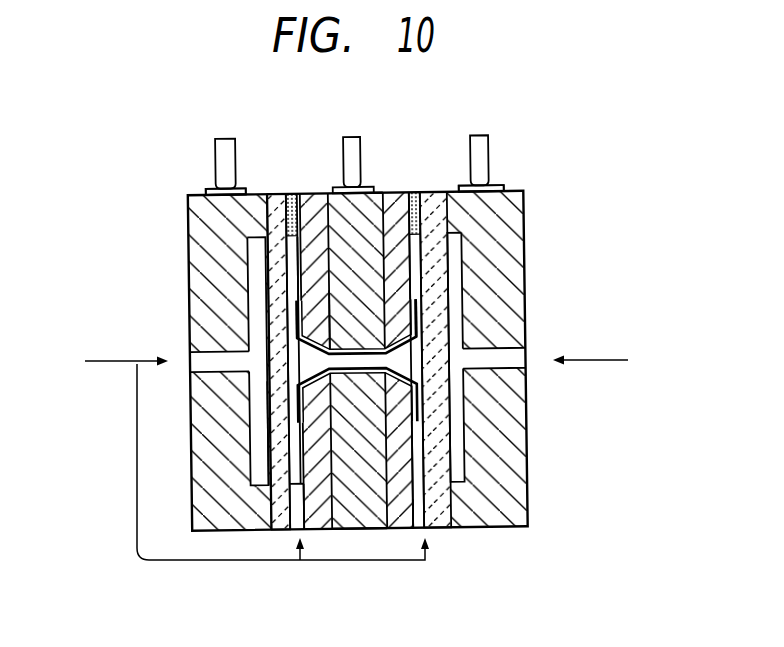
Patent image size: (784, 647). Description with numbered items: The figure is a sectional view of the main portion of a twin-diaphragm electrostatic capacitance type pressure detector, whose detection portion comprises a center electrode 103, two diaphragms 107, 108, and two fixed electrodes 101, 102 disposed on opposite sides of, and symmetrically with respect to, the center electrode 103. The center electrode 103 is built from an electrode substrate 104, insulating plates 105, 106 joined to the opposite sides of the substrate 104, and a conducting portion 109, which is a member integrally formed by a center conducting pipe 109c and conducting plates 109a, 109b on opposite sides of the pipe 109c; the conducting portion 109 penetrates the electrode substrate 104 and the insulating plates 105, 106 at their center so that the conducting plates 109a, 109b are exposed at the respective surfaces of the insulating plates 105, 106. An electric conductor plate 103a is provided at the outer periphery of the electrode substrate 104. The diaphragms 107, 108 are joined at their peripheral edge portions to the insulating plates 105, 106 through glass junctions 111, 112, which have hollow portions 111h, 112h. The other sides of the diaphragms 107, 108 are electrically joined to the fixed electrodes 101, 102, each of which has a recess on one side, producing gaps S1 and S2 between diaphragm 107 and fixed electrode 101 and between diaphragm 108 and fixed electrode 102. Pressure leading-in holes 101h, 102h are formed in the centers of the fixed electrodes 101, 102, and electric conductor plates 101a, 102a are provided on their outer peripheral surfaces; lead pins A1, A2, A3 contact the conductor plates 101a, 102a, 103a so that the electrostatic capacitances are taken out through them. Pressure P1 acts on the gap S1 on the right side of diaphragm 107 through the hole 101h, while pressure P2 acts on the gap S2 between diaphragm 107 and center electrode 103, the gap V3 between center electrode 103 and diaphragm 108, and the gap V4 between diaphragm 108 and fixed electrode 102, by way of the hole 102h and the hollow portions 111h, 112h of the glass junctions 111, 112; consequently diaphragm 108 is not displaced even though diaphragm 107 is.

The fixed electrode 101 is at (517, 473).
The electric conductor plate 101a is at (497, 188).
The pressure leading-in hole 101h is at (505, 372).
The fixed electrode 102 is at (202, 508).
The electric conductor plate 102a is at (207, 188).
The pressure leading-in hole 102h is at (203, 375).
The center electrode 103 is at (245, 240).
The electric conductor plate 103a is at (365, 190).
The electrode substrate 104 is at (376, 531).
The insulating plate 105 is at (392, 190).
The insulating plate 106 is at (317, 195).
The diaphragm 107 is at (445, 503).
The diaphragm 108 is at (282, 532).
The conducting portion 109 is at (70, 238).
The conducting plate 109a is at (282, 262).
The conducting plate 109b is at (297, 313).
The center conducting pipe 109c is at (333, 302).
The glass junction 111 is at (415, 190).
The hollow portion 111h is at (428, 513).
The glass junction 112 is at (290, 192).
The hollow portion 112h is at (322, 531).
The lead pin A1 is at (481, 150).
The lead pin A2 is at (225, 152).
The lead pin A3 is at (353, 151).
The pressure P1 is at (607, 356).
The pressure P2 is at (239, 454).
The gap S1 is at (458, 418).
The gap S2 is at (420, 330).
The gap V3 is at (265, 415).
The gap V4 is at (260, 458).